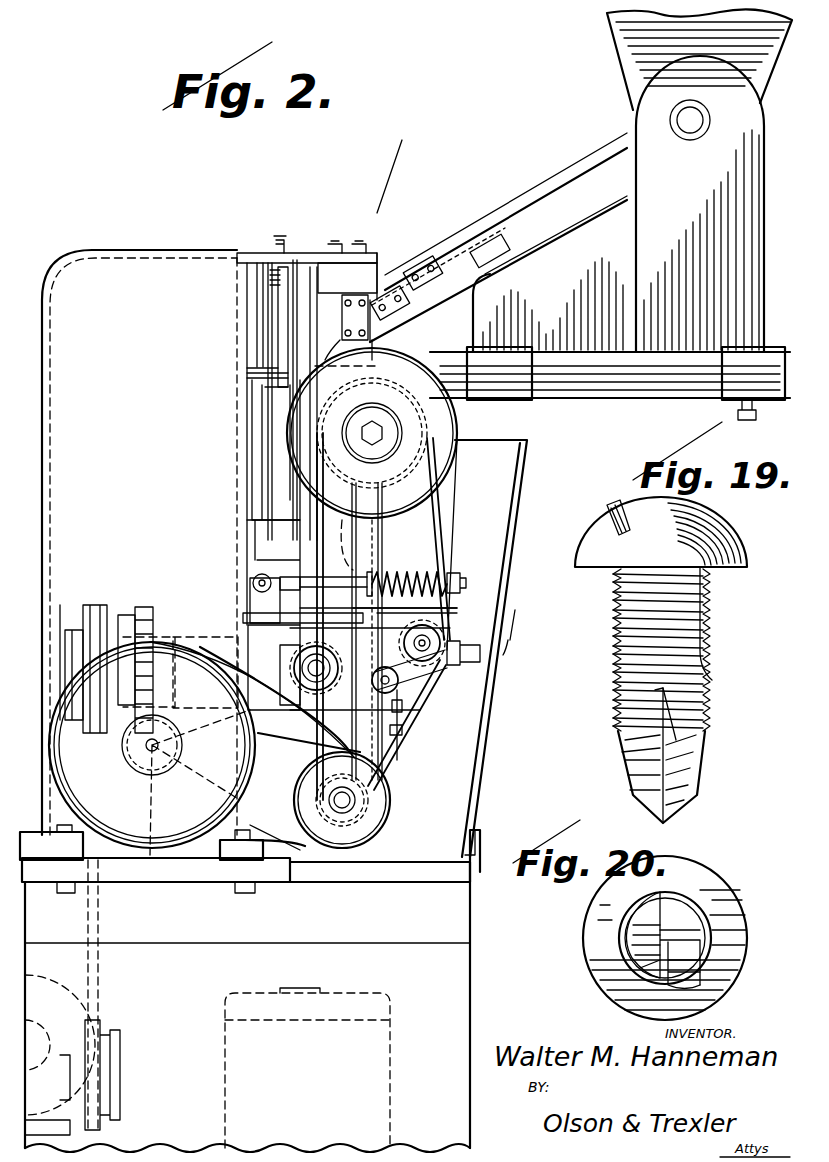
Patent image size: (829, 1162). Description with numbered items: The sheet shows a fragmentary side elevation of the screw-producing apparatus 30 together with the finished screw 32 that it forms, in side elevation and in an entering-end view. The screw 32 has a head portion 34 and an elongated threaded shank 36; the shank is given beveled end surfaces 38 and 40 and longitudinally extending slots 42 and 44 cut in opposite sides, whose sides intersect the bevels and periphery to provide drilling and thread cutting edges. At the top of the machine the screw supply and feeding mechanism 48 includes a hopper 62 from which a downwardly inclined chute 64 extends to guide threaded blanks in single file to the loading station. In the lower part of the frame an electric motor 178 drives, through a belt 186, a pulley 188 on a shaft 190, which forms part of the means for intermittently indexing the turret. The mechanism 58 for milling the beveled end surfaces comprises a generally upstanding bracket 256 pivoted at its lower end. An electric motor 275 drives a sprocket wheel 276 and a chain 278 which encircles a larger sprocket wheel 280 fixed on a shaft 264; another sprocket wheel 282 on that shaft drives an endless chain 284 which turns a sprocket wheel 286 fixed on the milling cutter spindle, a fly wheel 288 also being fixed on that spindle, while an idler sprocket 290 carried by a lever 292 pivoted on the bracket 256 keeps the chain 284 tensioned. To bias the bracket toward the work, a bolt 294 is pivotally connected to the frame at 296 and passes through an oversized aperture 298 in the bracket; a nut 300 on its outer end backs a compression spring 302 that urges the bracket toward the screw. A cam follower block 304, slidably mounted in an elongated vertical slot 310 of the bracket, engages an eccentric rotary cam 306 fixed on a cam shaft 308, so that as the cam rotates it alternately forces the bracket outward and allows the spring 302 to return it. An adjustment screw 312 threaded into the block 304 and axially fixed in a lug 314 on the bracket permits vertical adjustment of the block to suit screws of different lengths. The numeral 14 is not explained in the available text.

In FIG. 2, the apparatus 30 is at (385, 206).
In FIG. 2, the screw supply and feeding mechanism 48 is at (391, 264).
In FIG. 2, the chute 64 is at (517, 202).
In FIG. 2, the hopper 62 is at (612, 60).
In FIG. 2, the strip 14 is at (391, 331).
In FIG. 2, the sprocket wheel 286 is at (455, 465).
In FIG. 2, the oversized aperture 298 is at (366, 478).
In FIG. 2, the fly wheel 288 is at (433, 482).
In FIG. 2, the mechanism 58 is at (456, 466).
In FIG. 2, the bolt 294 is at (450, 582).
In FIG. 2, the compression spring 302 is at (410, 573).
In FIG. 2, the nut 300 is at (455, 601).
In FIG. 2, the pivotal connection 296 is at (253, 583).
In FIG. 2, the elongated vertical slot 310 is at (303, 600).
In FIG. 2, the cam shaft 308 is at (272, 628).
In FIG. 2, the bracket 256 is at (385, 613).
In FIG. 2, the cam follower block 304 is at (321, 684).
In FIG. 2, the eccentric rotary cam 306 is at (365, 677).
In FIG. 2, the lever 292 is at (445, 668).
In FIG. 2, the idler sprocket 290 is at (501, 657).
In FIG. 2, the endless chain 284 is at (415, 707).
In FIG. 2, the adjustment screw 312 is at (398, 725).
In FIG. 2, the lug 314 is at (396, 740).
In FIG. 2, the sprocket wheel 282 is at (380, 788).
In FIG. 2, the sprocket wheel 280 is at (348, 858).
In FIG. 2, the shaft 264 is at (372, 808).
In FIG. 2, the chain 278 is at (178, 782).
In FIG. 2, the sprocket wheel 276 is at (182, 758).
In FIG. 2, the pulley 188 is at (93, 605).
In FIG. 2, the shaft 190 is at (60, 630).
In FIG. 2, the electric motor 275 is at (146, 835).
In FIG. 2, the belt 186 is at (97, 968).
In FIG. 2, the electric motor 178 is at (280, 1078).
In FIG. 19, the head portion 34 is at (718, 670).
In FIG. 20, the head portion 34 is at (665, 862).
In FIG. 19, the screw 32 is at (700, 722).
In FIG. 20, the screw 32 is at (753, 896).
In FIG. 19, the threaded shank 36 is at (700, 730).
In FIG. 19, the slot 42 is at (645, 767).
In FIG. 20, the slot 42 is at (632, 935).
In FIG. 20, the beveled end surface 40 is at (672, 920).
In FIG. 20, the slot 44 is at (690, 970).
In FIG. 20, the beveled end surface 38 is at (645, 962).